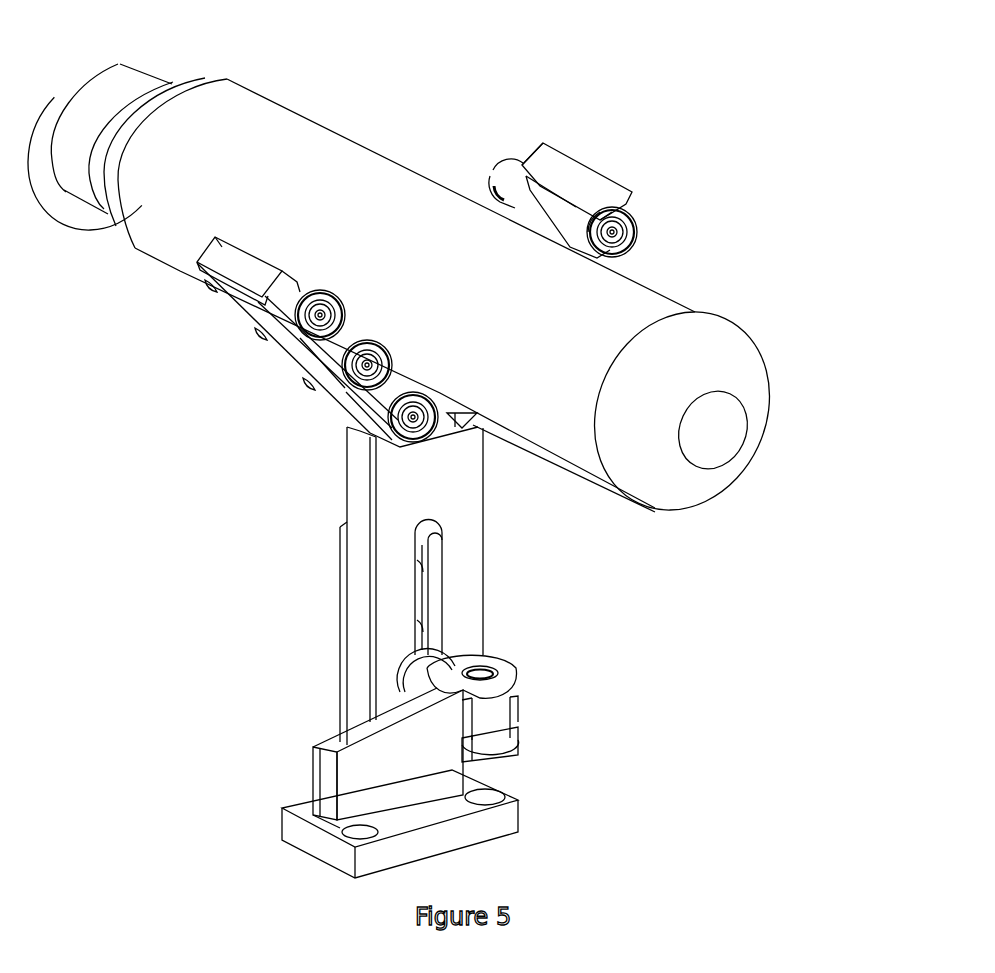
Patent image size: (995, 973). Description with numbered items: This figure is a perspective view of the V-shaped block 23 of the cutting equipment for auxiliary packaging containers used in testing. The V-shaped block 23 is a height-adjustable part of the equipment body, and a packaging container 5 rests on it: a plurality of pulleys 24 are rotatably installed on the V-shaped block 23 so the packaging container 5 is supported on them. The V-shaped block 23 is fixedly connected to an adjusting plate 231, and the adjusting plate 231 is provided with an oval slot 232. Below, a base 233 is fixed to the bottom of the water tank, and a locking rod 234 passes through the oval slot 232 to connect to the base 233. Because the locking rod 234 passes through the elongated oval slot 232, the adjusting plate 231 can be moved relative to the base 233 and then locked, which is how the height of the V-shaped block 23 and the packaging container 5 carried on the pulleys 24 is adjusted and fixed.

The packaging container 5 is at (311, 139).
The V-shaped block 23 is at (666, 153).
The pulley 24 is at (653, 216).
The adjusting plate 231 is at (409, 586).
The oval slot 232 is at (401, 596).
The base 233 is at (328, 706).
The locking rod 234 is at (434, 764).